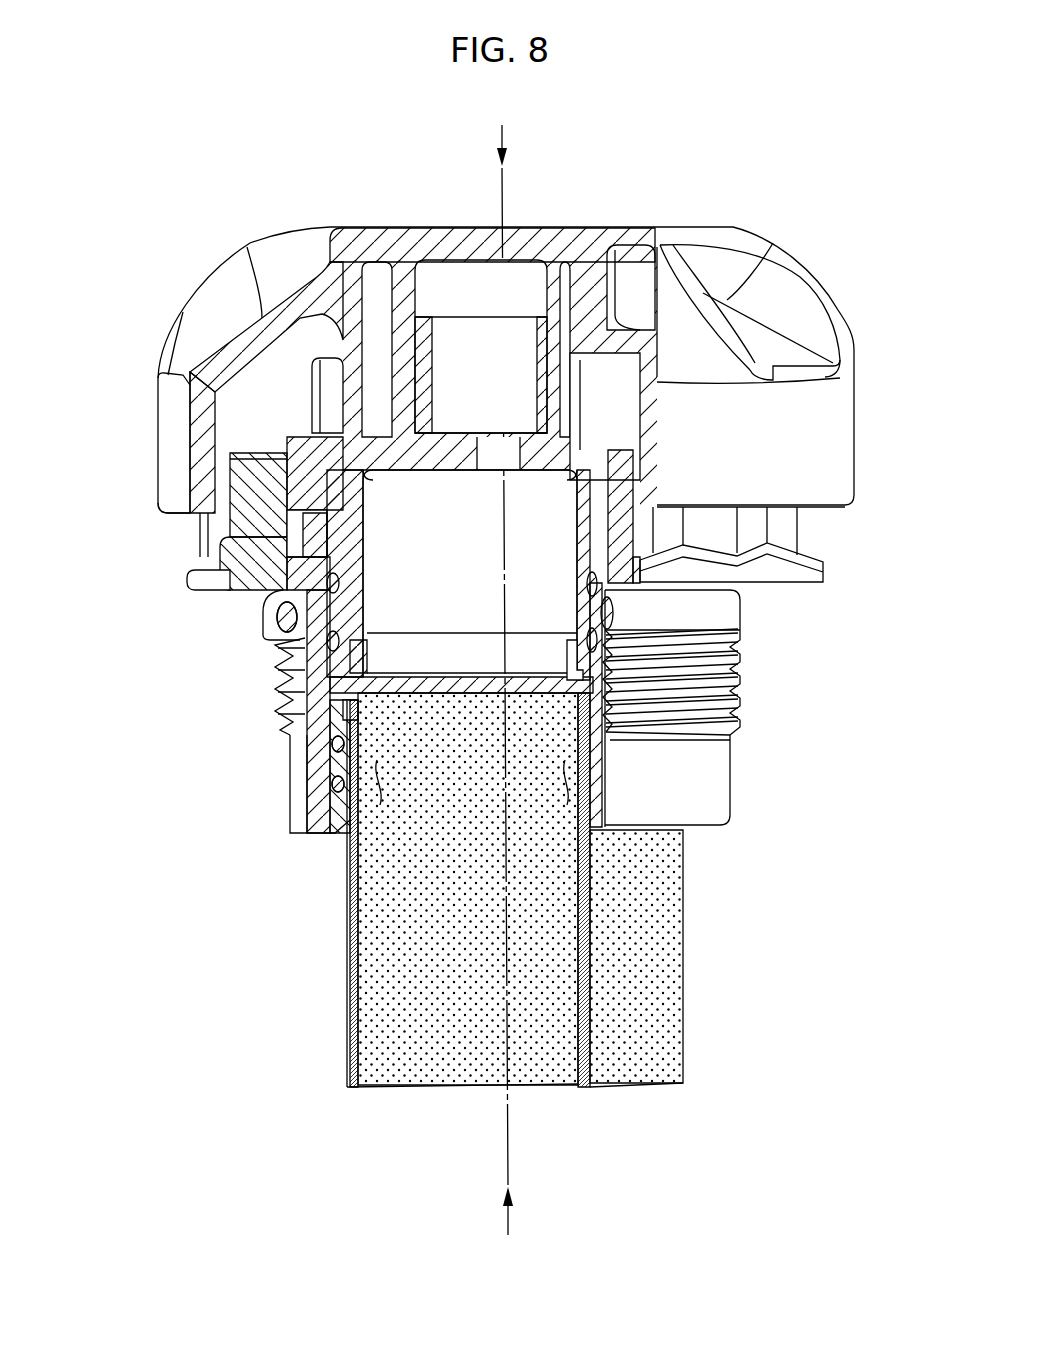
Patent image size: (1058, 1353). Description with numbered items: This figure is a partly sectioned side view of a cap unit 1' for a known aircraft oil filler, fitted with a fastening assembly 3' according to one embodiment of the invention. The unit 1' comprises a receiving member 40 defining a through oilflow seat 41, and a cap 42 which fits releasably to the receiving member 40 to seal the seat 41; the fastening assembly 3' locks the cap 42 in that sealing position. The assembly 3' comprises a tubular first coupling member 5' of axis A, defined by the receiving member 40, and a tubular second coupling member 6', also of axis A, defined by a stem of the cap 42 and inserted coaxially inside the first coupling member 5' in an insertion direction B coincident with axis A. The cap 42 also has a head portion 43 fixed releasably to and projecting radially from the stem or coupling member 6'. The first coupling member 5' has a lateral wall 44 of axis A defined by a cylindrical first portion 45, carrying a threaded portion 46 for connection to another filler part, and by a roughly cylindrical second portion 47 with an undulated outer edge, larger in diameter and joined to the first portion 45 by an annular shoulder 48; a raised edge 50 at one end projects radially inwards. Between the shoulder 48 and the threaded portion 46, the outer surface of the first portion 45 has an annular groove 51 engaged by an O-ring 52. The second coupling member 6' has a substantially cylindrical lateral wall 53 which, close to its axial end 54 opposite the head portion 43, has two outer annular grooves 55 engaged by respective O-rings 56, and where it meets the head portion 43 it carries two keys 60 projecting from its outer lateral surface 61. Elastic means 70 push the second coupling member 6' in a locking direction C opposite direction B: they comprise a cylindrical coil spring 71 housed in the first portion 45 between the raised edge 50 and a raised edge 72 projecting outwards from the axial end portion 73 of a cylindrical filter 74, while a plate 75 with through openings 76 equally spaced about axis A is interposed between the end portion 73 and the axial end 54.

The cap unit 1' is at (316, 680).
The fastening assembly 3' is at (146, 544).
The first coupling member 5' is at (717, 722).
The second coupling member 6' is at (227, 422).
The axis A is at (508, 1105).
The insertion direction B is at (502, 132).
The locking direction C is at (512, 1215).
The receiving member 40 is at (762, 617).
The through oilflow seat 41 is at (596, 540).
The cap 42 is at (383, 220).
The head portion 43 is at (540, 240).
The lateral wall 44 is at (260, 685).
The cylindrical first portion 45 is at (694, 768).
The threaded portion 46 is at (717, 673).
The second portion 47 is at (238, 494).
The annular shoulder 48 is at (242, 602).
The raised edge 50 is at (327, 840).
The annular groove 51 is at (266, 646).
The O-ring 52 is at (720, 605).
The lateral wall 53 is at (343, 535).
The axial end 54 is at (350, 664).
The outer annular grooves 55 is at (352, 577).
The O-rings 56 is at (585, 640).
The keys 60 is at (322, 450).
The outer lateral surface 61 is at (308, 537).
The elastic means 70 is at (313, 779).
The cylindrical coil spring 71 is at (585, 762).
The raised edge 72 is at (347, 717).
The axial end portion 73 is at (375, 762).
The cylindrical filter 74 is at (650, 947).
The plate 75 is at (440, 695).
The through openings 76 is at (510, 690).